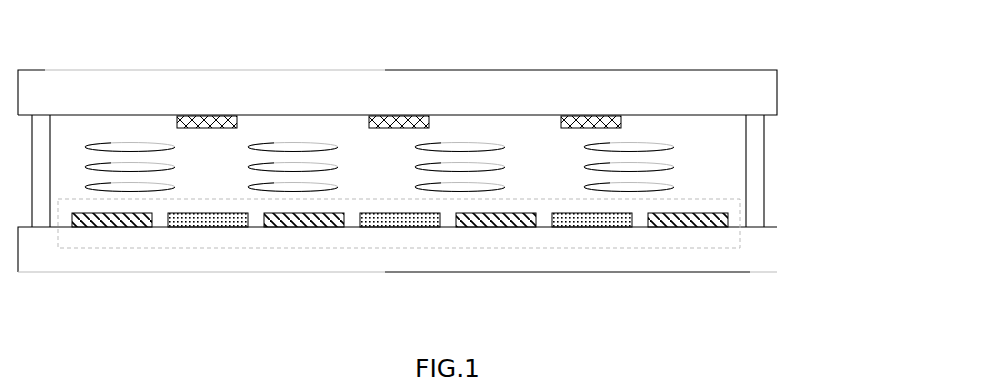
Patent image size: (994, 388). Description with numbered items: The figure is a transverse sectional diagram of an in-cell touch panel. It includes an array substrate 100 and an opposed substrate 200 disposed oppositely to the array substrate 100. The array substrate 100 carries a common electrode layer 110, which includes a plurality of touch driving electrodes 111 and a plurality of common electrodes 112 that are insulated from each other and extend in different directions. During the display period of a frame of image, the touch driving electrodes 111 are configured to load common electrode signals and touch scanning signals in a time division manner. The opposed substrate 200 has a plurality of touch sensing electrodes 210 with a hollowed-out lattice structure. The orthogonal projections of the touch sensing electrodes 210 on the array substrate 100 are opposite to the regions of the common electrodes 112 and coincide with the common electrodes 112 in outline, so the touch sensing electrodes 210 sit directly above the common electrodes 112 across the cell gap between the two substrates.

The array substrate 100 is at (777, 248).
The common electrode layer 110 is at (445, 248).
The touch driving electrodes 111 is at (140, 227).
The common electrodes 112 is at (212, 227).
The opposed substrate 200 is at (777, 92).
The touch sensing electrodes 210 is at (215, 116).